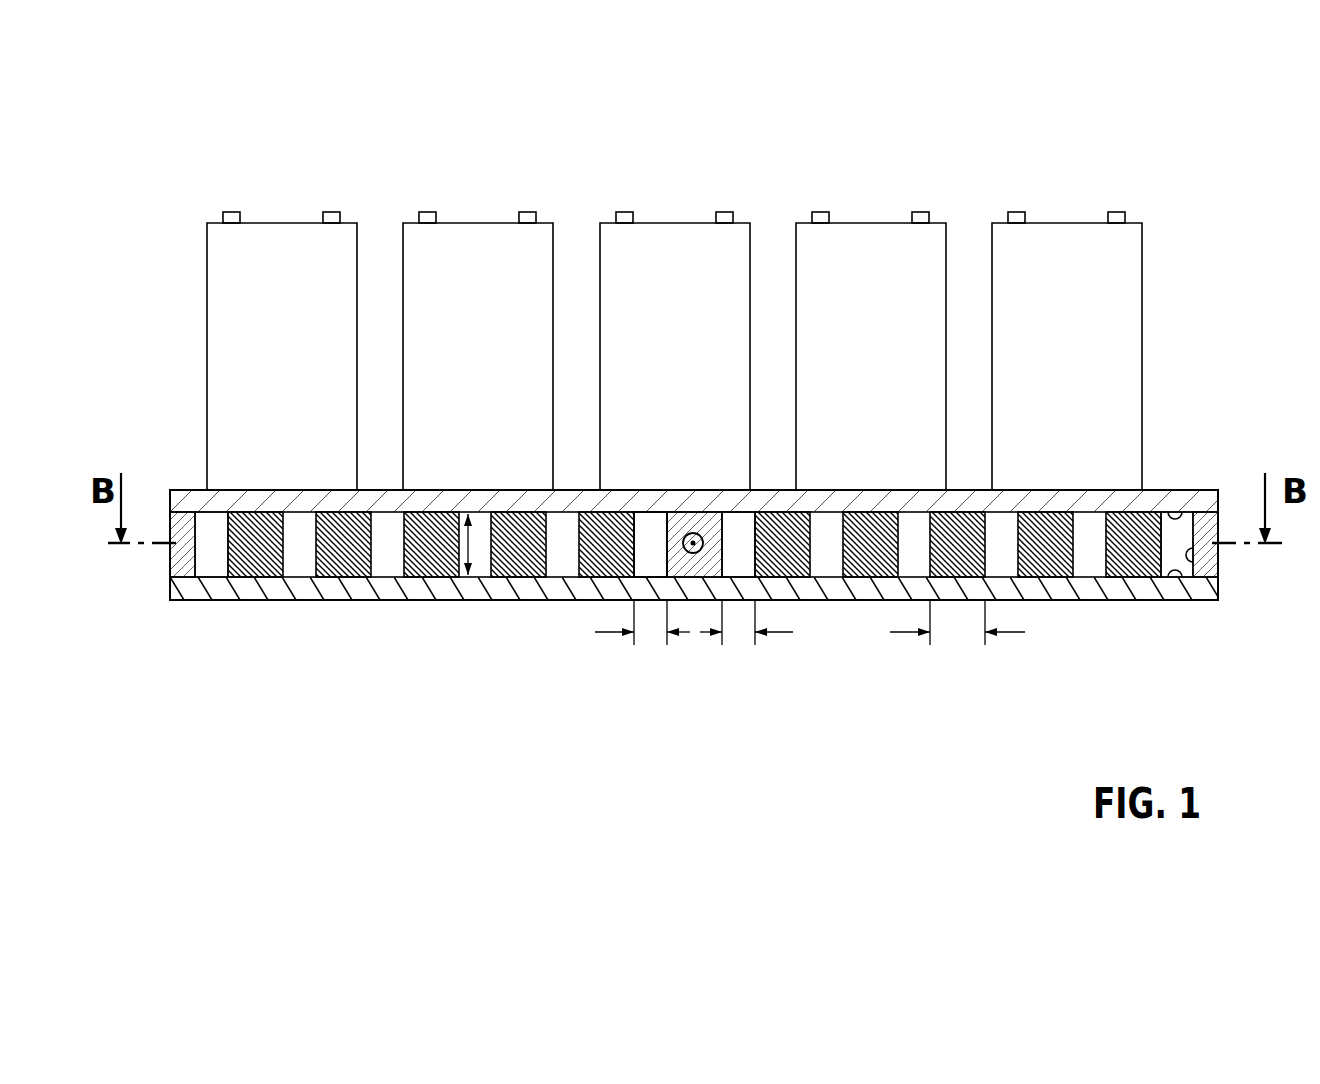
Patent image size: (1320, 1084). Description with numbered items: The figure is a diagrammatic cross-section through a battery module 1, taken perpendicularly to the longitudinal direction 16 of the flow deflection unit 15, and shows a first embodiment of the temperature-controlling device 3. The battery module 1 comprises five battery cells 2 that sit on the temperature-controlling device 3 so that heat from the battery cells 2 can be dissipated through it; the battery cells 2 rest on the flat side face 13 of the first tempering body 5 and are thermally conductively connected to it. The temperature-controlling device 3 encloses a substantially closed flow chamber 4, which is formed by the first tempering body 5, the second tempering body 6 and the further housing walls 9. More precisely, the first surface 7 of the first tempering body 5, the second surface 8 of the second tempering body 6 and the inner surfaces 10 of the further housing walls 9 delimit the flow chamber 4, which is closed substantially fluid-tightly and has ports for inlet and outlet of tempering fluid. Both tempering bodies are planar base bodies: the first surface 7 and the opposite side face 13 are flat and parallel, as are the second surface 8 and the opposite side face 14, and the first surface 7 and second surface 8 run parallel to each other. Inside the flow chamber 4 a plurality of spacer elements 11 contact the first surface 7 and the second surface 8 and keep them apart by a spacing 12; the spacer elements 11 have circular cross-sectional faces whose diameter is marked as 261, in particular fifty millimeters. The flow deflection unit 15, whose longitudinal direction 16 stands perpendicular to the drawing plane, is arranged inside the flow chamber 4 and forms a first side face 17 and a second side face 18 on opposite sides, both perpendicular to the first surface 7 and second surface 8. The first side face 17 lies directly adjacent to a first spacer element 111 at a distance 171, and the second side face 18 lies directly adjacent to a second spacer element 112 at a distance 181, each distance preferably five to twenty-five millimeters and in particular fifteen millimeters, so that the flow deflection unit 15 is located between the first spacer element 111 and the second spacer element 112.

The battery module 1 is at (302, 720).
The battery cell 2 is at (863, 237).
The temperature-controlling device 3 is at (217, 615).
The flow chamber 4 is at (643, 537).
The first tempering body 5 is at (1160, 502).
The second tempering body 6 is at (1141, 590).
The first surface 7 is at (1181, 515).
The second surface 8 is at (1184, 590).
The further housing walls 9 is at (180, 527).
The inner surfaces 10 is at (205, 522).
The spacer element 11 is at (339, 567).
The spacing 12 is at (470, 545).
The side face 13 is at (1146, 490).
The side face 14 is at (1081, 590).
The flow deflection unit 15 is at (710, 537).
The longitudinal direction 16 is at (694, 534).
The first side face 17 is at (665, 545).
The second side face 18 is at (742, 547).
The first spacer element 111 is at (596, 565).
The second spacer element 112 is at (783, 567).
The distance 171 is at (652, 630).
The distance 181 is at (739, 630).
The diameter 261 is at (957, 631).